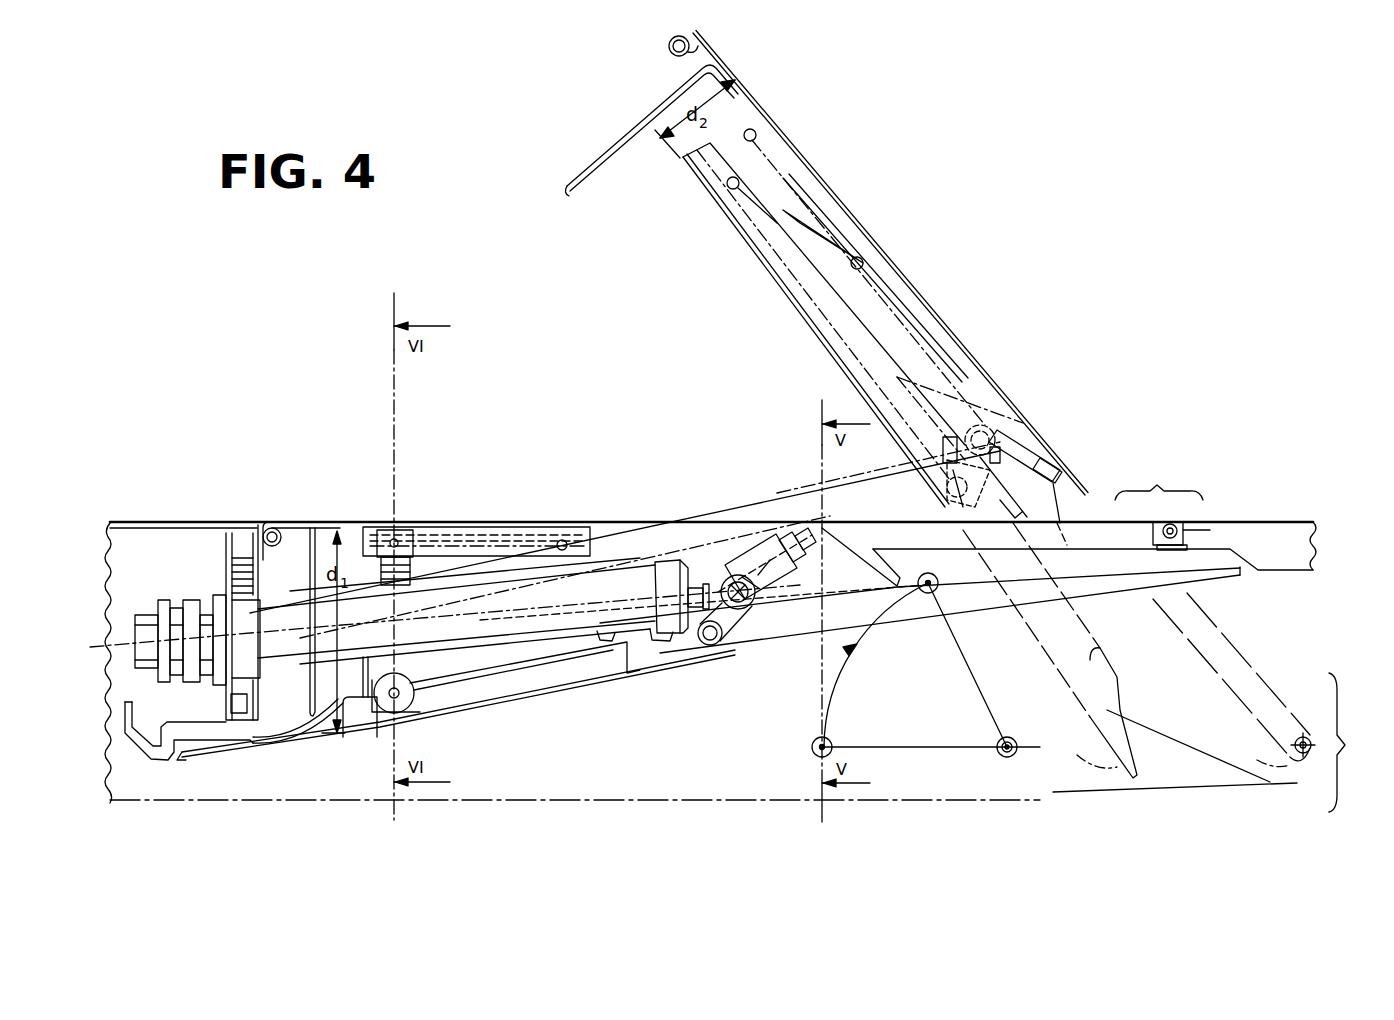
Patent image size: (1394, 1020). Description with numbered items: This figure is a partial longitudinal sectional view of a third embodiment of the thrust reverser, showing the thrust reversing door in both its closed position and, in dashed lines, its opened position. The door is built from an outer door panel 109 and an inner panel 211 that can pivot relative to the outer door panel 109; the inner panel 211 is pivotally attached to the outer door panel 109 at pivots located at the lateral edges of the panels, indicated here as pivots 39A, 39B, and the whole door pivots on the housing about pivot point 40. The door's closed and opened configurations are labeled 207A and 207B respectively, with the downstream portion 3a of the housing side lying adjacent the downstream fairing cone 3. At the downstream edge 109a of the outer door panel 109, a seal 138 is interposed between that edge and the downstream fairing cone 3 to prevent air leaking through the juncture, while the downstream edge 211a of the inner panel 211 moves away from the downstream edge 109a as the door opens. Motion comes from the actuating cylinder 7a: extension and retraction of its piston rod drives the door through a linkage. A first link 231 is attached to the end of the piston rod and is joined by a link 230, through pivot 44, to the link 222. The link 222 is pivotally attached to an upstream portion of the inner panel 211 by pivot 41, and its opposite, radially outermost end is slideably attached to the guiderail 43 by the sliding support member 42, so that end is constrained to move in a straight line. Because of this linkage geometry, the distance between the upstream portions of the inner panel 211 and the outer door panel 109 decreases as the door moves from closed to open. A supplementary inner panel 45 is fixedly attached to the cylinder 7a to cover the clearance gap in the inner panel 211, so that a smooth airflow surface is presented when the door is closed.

The downstream fairing cone 3 is at (710, 662).
The frame portion 3a is at (1193, 521).
The actuating cylinder 7a is at (613, 573).
The pivot point 39A is at (818, 746).
The pivot point 39B is at (928, 595).
The pivot point 40 is at (1003, 752).
The pivot 41 is at (389, 698).
The sliding support member 42 is at (395, 540).
The guiderail 43 is at (478, 543).
The pivot 44 is at (390, 617).
The supplementary inner panel 45 is at (547, 677).
The outer door panel 109 is at (1107, 538).
The downstream edge 109a is at (1180, 541).
The seal 138 is at (1213, 523).
The upper link assembly 207A is at (1159, 484).
The lower link assembly 207B is at (1358, 742).
The inner panel 211 is at (1130, 565).
The downstream edge 211a is at (1238, 575).
The link 222 is at (412, 675).
The link 230 is at (677, 642).
The first link 231 is at (737, 632).